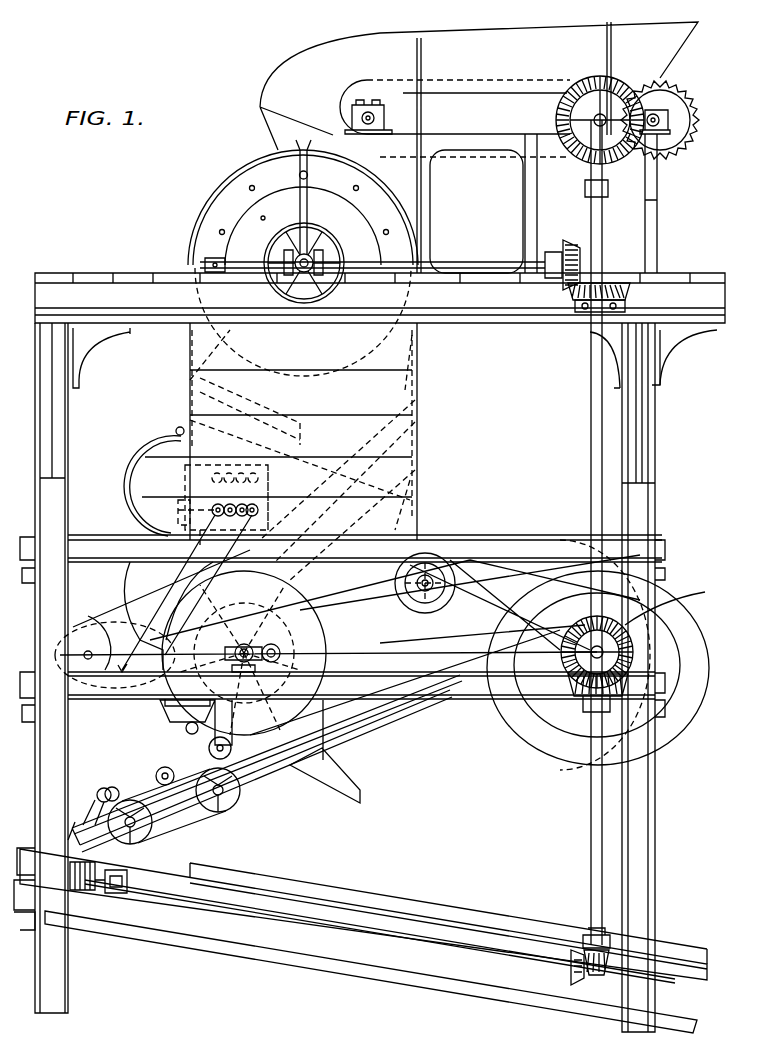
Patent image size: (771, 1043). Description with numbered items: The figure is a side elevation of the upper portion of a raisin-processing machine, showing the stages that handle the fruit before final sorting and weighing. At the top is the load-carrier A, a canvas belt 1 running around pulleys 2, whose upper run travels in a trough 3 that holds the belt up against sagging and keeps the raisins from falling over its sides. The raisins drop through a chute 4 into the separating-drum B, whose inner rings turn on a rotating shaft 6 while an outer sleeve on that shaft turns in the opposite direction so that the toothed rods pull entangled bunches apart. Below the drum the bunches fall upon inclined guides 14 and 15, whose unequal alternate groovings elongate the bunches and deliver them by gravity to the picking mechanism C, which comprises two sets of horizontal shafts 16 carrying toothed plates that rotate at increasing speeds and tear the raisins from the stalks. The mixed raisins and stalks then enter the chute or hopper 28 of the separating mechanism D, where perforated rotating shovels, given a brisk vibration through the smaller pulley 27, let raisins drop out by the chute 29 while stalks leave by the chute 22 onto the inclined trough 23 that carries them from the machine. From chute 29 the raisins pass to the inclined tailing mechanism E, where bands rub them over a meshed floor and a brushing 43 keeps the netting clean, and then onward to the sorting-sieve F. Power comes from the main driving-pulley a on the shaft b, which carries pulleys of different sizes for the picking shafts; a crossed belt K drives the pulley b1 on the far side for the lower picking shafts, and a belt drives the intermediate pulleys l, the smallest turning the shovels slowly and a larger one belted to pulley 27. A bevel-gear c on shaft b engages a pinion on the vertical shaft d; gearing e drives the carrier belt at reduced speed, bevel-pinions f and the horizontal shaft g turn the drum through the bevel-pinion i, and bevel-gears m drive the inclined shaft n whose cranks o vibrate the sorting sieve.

The load-carrier A is at (479, 147).
The canvas belt 1 is at (465, 82).
The pulleys 2 is at (455, 107).
The trough 3 is at (510, 93).
The chute 4 is at (298, 191).
The separating-drum B is at (303, 263).
The bevel-pinion i is at (290, 250).
The rotating shaft 6 is at (320, 250).
The gearing e is at (667, 120).
The bevel-pinions f is at (590, 228).
The horizontal shaft g is at (482, 273).
The vertical shaft d is at (600, 512).
The guide 14 is at (279, 451).
The guide 15 is at (300, 454).
The picking mechanism C is at (196, 486).
The shafts 16 is at (215, 505).
The separating mechanism D is at (225, 648).
The pulley 27 is at (275, 645).
The chute or hopper 28 is at (162, 593).
The pulley b1 is at (90, 630).
The intermediate pulleys l is at (395, 580).
The crossed belt K is at (350, 645).
The main driving-pulley a is at (598, 655).
The shaft b is at (615, 664).
The bevel-gear c is at (672, 601).
The tailing mechanism E is at (265, 763).
The chute 22 is at (325, 751).
The chute 29 is at (232, 720).
The brushing 43 is at (210, 826).
The sorting-sieve F is at (363, 914).
The inclined shaft n is at (371, 972).
The inclined plane or trough 23 is at (448, 913).
The bevel-gears m is at (380, 939).
The cranks o is at (98, 867).